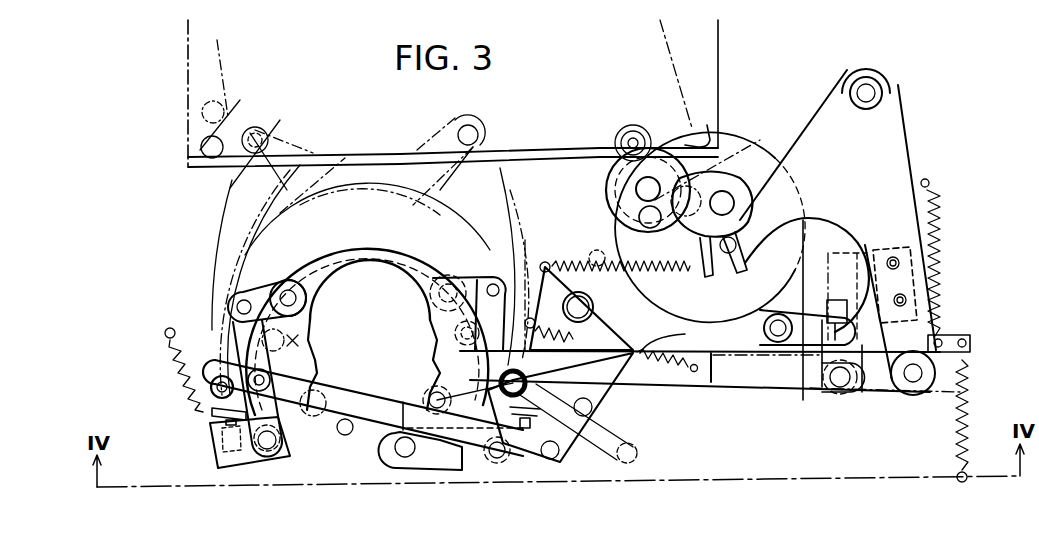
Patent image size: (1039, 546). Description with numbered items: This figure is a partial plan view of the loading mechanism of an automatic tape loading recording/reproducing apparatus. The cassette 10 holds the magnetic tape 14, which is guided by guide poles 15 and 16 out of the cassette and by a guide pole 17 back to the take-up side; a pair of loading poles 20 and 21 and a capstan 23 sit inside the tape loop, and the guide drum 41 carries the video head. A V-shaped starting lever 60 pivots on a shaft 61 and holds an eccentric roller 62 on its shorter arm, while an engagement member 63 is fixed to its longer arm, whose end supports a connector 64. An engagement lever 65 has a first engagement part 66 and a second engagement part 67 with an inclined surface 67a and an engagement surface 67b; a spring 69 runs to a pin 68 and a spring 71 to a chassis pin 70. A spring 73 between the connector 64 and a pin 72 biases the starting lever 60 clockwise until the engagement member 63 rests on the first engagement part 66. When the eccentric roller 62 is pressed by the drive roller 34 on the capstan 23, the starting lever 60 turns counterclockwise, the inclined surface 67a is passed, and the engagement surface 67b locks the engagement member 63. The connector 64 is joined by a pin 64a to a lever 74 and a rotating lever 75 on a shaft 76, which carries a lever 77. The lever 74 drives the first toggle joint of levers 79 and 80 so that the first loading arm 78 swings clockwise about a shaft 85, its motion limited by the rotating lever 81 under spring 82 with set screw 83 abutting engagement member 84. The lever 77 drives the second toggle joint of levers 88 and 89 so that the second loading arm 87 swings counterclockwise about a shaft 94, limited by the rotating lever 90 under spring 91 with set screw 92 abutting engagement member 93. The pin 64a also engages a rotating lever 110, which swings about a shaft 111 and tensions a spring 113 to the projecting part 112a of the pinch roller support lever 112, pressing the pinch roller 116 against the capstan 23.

The cassette 10 is at (190, 110).
The magnetic tape 14 is at (224, 70).
The guide pole 15 is at (217, 120).
The guide pole 16 is at (198, 150).
The guide pole 17 is at (692, 126).
The loading pole 20 is at (215, 375).
The loading pole 21 is at (500, 378).
The capstan 23 is at (626, 130).
The drive roller 34 is at (648, 128).
The guide drum 41 is at (253, 231).
The starting lever 60 is at (907, 134).
The shaft 61 is at (876, 92).
The eccentric roller 62 is at (722, 135).
The engagement member 63 is at (917, 315).
The connector 64 is at (750, 377).
The pin 64a is at (686, 334).
The engagement lever 65 is at (805, 345).
The first engagement part 66 is at (835, 300).
The second engagement part 67 is at (935, 330).
The inclined surface 67a is at (860, 253).
The engagement surface 67b is at (925, 384).
The pin 68 is at (929, 179).
The spring 69 is at (942, 234).
The pin 70 is at (957, 481).
The spring 71 is at (970, 411).
The pin 72 is at (548, 262).
The spring 73 is at (663, 383).
The lever 74 is at (530, 318).
The rotating lever 75 is at (593, 408).
The shaft 76 is at (605, 428).
The lever 77 is at (366, 392).
The first loading arm 78 is at (308, 332).
The lever 79 is at (496, 467).
The lever 80 is at (503, 283).
The rotating lever 81 is at (447, 463).
The spring 82 is at (637, 457).
The set screw 83 is at (530, 470).
The engagement member 84 is at (578, 458).
The shaft 85 is at (436, 300).
The second loading arm 87 is at (438, 237).
The lever 88 is at (300, 455).
The lever 89 is at (240, 338).
The rotating lever 90 is at (243, 458).
The spring 91 is at (180, 378).
The set screw 92 is at (222, 446).
The engagement member 93 is at (210, 410).
The shaft 94 is at (298, 299).
The rotating lever 110 is at (612, 317).
The shaft 111 is at (634, 272).
The pinch roller support lever 112 is at (732, 182).
The projecting part 112a is at (708, 278).
The spring 113 is at (597, 250).
The pinch roller 116 is at (610, 184).